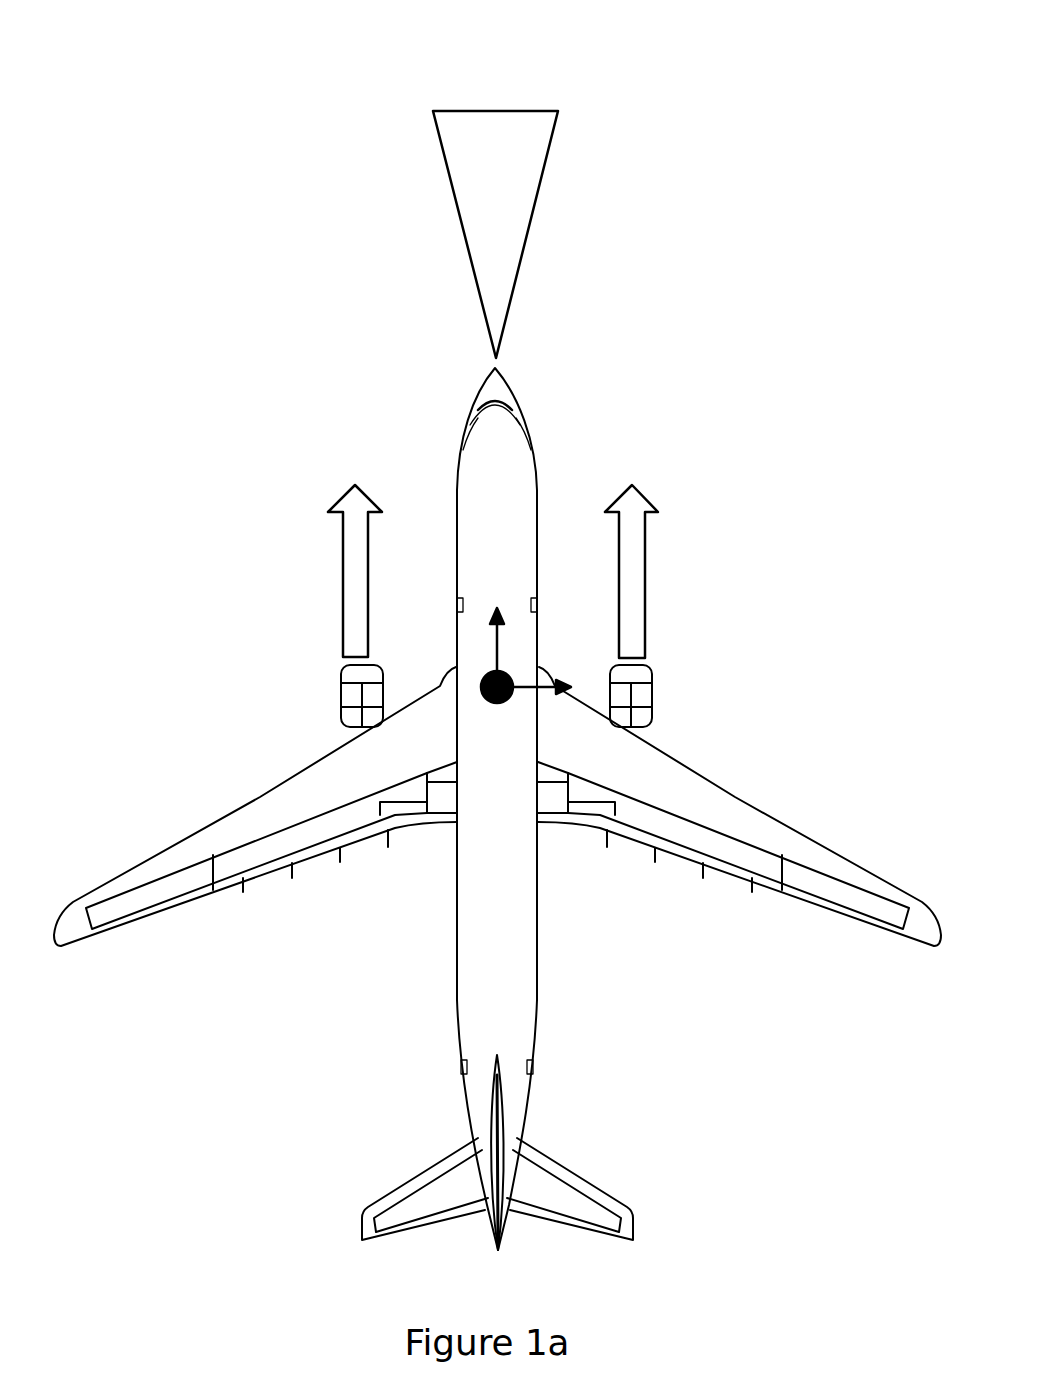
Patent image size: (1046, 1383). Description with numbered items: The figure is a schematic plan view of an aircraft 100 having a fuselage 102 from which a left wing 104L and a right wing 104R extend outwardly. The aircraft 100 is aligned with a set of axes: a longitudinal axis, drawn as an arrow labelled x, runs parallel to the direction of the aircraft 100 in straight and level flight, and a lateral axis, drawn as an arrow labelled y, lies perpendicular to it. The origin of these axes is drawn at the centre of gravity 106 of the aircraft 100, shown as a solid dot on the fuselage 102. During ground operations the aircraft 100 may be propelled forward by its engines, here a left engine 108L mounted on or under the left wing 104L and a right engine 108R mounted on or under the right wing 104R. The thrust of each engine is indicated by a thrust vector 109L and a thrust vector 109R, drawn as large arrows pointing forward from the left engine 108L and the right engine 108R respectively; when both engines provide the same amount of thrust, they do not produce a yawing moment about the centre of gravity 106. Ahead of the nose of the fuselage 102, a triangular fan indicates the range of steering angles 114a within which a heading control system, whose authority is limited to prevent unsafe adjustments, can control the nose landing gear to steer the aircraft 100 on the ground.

The aircraft 100 is at (458, 28).
The fuselage 102 is at (470, 890).
The left wing 104L is at (212, 815).
The right wing 104R is at (768, 815).
The centre of gravity 106 is at (508, 677).
The left engine 108L is at (335, 683).
The right engine 108R is at (655, 688).
The thrust vector 109L is at (360, 562).
The thrust vector 109R is at (630, 529).
The range of steering angles 114a is at (455, 196).